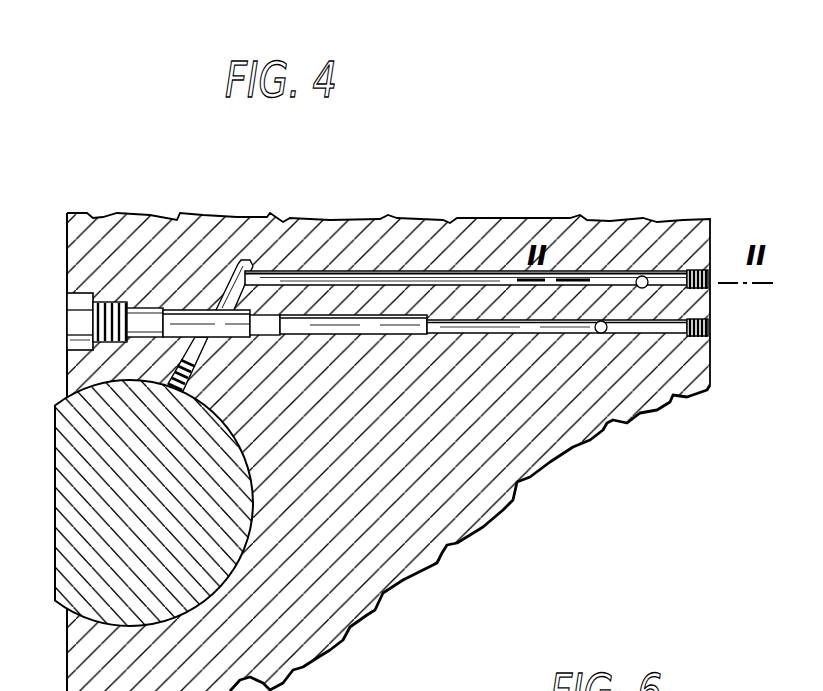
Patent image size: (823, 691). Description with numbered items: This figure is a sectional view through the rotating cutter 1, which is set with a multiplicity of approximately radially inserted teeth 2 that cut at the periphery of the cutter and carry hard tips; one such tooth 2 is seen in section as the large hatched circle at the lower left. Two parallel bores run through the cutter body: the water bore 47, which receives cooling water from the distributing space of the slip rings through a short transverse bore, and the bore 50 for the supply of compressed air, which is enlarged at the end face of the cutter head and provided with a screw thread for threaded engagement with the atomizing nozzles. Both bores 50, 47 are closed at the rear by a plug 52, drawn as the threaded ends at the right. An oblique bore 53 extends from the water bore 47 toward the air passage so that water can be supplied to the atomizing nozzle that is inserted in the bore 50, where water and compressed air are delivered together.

The rotating cutter 1 is at (402, 237).
The tooth 2 is at (202, 513).
The water bore 47 is at (305, 272).
The bore for the supply of compressed air 50 is at (549, 332).
The plug 52 is at (698, 272).
The oblique bore 53 is at (228, 283).